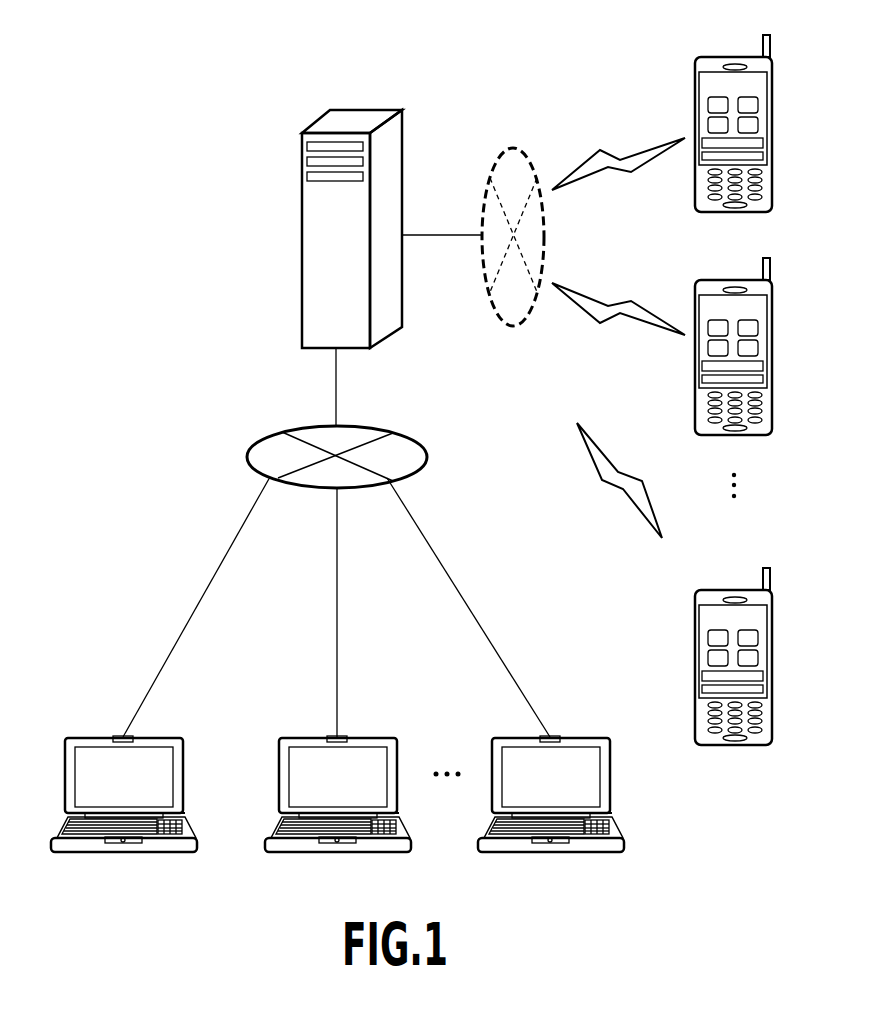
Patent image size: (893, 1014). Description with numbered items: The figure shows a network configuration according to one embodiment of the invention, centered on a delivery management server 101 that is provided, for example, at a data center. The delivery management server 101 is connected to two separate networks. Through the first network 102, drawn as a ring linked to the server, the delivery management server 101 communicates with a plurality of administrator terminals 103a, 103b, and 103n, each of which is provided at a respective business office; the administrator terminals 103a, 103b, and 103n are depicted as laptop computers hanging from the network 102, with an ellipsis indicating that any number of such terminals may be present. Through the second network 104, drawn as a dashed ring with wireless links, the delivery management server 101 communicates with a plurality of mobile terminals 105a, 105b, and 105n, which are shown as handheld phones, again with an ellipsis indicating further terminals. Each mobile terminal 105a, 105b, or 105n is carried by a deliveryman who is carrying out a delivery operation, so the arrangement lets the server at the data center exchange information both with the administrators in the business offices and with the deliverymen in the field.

The delivery management server 101 is at (352, 120).
The network 102 is at (380, 425).
The administrator terminal 103a is at (178, 737).
The administrator terminal 103b is at (340, 769).
The administrator terminal 103n is at (553, 769).
The network 104 is at (513, 148).
The mobile terminal 105a is at (735, 53).
The mobile terminal 105b is at (733, 331).
The mobile terminal 105n is at (733, 641).